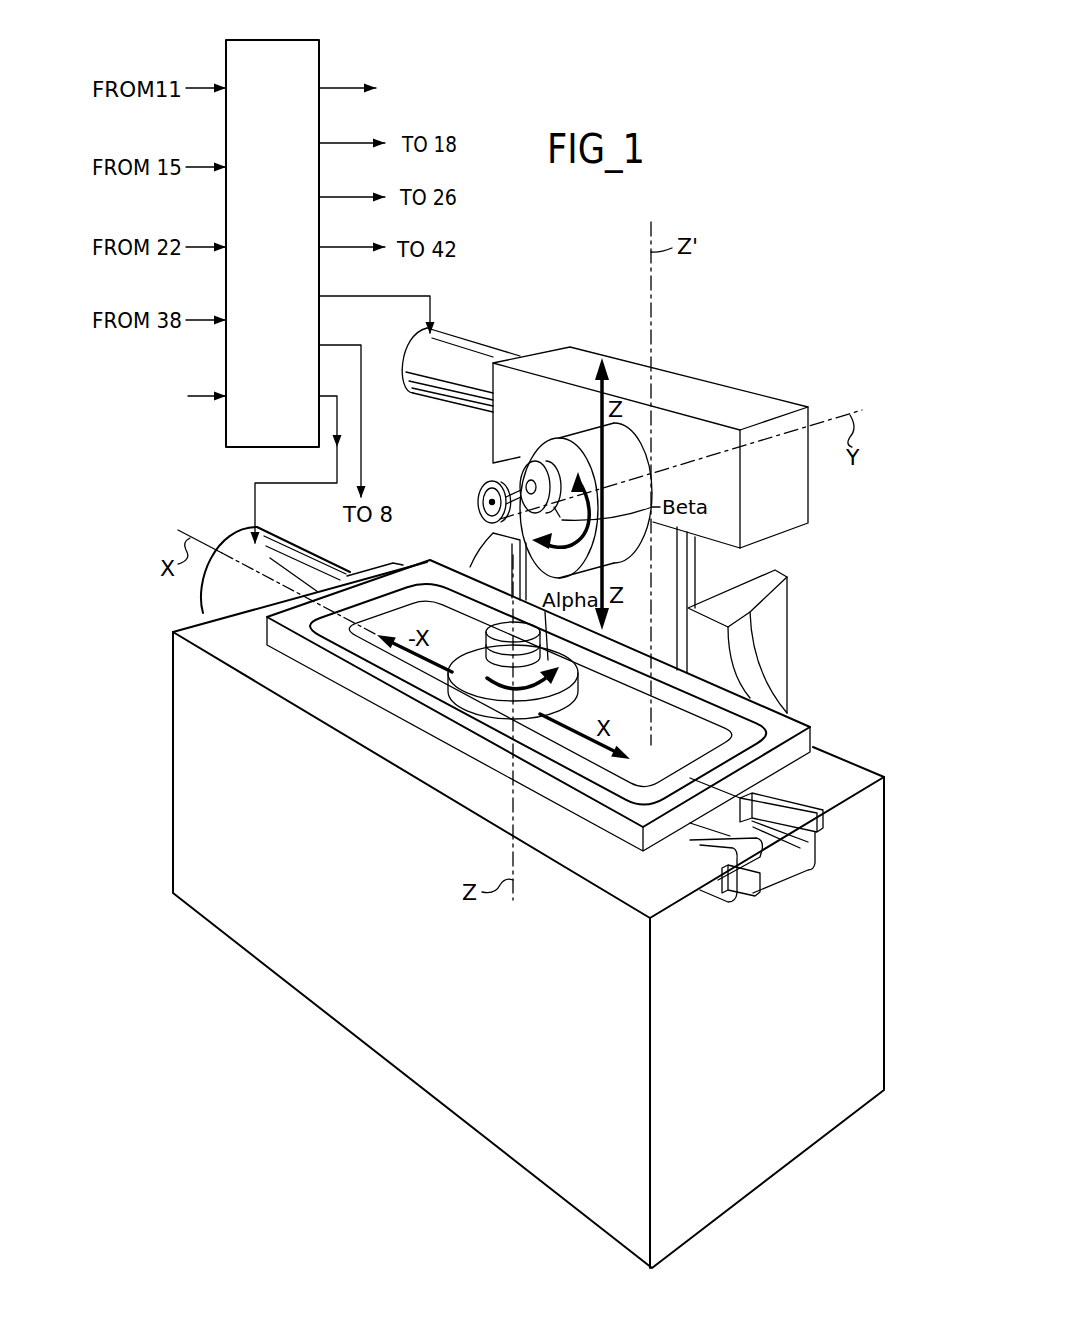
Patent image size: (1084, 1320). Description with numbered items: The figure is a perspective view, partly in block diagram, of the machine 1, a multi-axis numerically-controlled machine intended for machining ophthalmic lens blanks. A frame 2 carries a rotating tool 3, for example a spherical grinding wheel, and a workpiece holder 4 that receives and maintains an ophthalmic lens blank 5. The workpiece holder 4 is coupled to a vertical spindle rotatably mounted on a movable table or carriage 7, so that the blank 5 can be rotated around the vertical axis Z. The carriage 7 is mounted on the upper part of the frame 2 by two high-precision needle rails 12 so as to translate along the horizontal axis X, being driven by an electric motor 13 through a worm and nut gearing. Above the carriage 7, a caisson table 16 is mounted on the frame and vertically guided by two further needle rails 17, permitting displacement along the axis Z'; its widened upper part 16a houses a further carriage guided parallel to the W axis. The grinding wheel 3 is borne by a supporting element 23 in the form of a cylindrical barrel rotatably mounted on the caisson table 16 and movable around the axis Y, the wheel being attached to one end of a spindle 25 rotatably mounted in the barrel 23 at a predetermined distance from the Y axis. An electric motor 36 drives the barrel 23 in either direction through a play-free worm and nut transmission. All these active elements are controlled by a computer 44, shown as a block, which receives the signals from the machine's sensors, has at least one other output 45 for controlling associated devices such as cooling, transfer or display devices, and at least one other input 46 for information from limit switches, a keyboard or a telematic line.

The machine 1 is at (728, 302).
The frame 2 is at (334, 1020).
The rotating tool 3 is at (485, 483).
The workpiece holder 4 is at (480, 648).
The ophthalmic lens blank 5 is at (497, 618).
The carriage 7 is at (403, 710).
The needle rails 12 is at (772, 792).
The electric motor 13 is at (300, 557).
The caisson table 16 is at (757, 548).
The widened upper part 16a is at (757, 400).
The needle rails 17 is at (703, 596).
The supporting element 23 is at (583, 436).
The spindle 25 is at (520, 465).
The electric motor 36 is at (472, 342).
The computer 44 is at (267, 40).
The output 45 is at (350, 88).
The input 46 is at (190, 397).